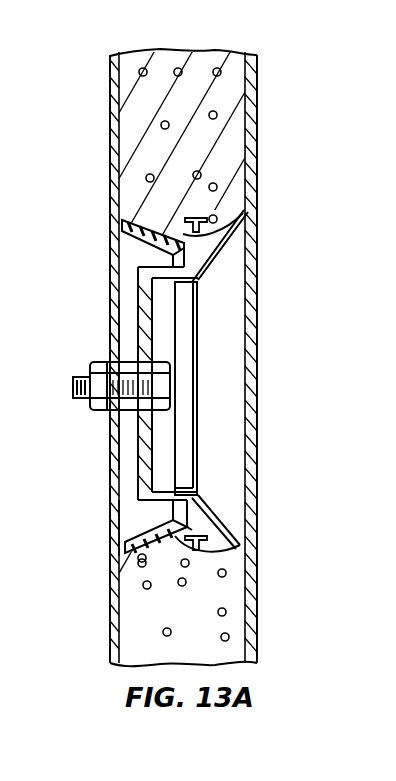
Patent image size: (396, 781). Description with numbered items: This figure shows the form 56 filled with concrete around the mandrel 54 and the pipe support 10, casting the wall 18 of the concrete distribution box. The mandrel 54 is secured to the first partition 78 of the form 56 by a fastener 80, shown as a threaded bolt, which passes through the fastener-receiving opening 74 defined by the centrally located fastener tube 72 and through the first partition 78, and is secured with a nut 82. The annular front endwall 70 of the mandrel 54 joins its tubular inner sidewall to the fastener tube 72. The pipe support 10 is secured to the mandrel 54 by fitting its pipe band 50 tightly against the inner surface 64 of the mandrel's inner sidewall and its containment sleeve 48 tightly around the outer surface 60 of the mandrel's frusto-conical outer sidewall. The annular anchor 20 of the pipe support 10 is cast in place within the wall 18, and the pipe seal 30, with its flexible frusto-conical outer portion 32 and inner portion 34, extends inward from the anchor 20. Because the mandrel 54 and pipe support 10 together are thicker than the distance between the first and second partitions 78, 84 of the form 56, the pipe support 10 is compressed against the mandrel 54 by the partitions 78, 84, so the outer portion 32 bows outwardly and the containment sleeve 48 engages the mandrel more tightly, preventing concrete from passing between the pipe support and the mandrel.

The pipe support 10 is at (218, 354).
The wall 18 is at (203, 67).
The annular anchor 20 is at (200, 195).
The pipe seal 30 is at (240, 545).
The outer portion 32 is at (222, 216).
The inner portion 34 is at (232, 236).
The containment sleeve 48 is at (205, 552).
The pipe band 50 is at (215, 500).
The mandrel 54 is at (131, 512).
The form 56 is at (96, 74).
The outer surface 60 is at (141, 218).
The inner surface 64 is at (162, 287).
The front endwall 70 is at (138, 305).
The fastener tube 72 is at (139, 356).
The fastener-receiving opening 74 is at (115, 362).
The first partition 78 is at (110, 112).
The fastener 80 is at (73, 388).
The nut 82 is at (95, 413).
The second partition 84 is at (253, 122).